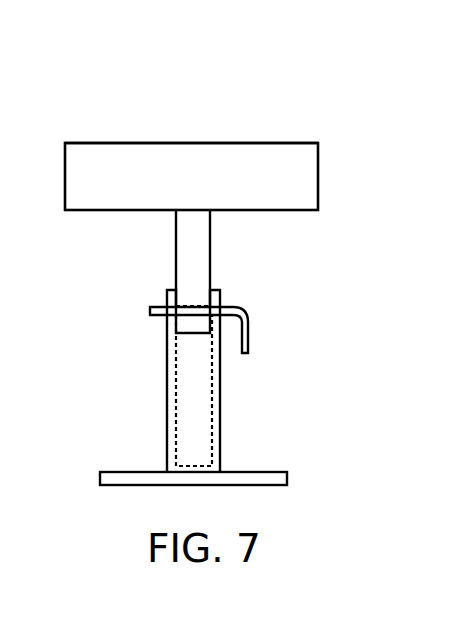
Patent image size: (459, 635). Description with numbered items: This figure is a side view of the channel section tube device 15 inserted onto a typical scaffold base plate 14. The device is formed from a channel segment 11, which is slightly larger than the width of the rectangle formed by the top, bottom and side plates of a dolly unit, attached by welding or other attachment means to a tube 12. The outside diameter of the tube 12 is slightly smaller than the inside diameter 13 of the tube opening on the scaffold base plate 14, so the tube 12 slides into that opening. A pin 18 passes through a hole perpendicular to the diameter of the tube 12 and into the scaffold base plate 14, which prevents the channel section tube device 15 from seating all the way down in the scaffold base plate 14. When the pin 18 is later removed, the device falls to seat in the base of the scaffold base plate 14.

The channel segment 11 is at (318, 172).
The tube 12 is at (209, 250).
The inside diameter 13 is at (174, 401).
The scaffold base plate 14 is at (221, 432).
The channel section tube device 15 is at (67, 133).
The pin 18 is at (248, 332).